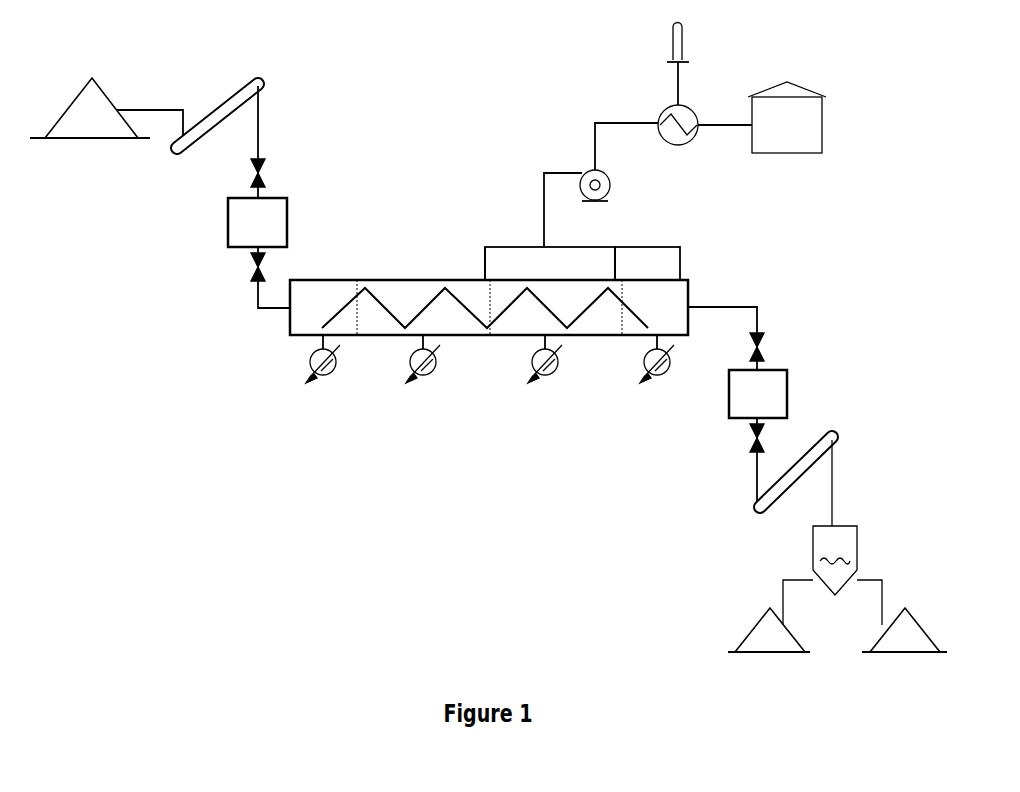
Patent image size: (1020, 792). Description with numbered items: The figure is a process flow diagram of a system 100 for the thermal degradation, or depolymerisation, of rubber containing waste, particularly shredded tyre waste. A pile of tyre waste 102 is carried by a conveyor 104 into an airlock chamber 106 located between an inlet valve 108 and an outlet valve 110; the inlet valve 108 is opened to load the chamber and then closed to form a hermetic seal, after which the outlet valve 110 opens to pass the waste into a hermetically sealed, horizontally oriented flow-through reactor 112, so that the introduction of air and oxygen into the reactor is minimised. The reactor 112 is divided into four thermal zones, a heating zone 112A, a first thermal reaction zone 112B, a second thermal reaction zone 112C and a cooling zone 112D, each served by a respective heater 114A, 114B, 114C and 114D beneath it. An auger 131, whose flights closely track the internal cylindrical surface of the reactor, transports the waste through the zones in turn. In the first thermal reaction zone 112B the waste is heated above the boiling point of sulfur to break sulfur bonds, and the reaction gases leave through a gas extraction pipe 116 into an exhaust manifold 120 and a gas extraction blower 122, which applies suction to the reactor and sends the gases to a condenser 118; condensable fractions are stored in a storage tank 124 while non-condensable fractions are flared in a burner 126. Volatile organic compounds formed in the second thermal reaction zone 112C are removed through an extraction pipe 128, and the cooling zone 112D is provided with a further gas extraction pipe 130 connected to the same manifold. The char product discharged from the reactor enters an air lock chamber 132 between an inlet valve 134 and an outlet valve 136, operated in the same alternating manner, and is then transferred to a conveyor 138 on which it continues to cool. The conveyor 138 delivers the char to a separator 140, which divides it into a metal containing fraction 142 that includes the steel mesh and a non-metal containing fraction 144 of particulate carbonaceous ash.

The system 100 is at (100, 579).
The tyre waste 102 is at (90, 122).
The conveyor 104 is at (217, 105).
The airlock chamber 106 is at (257, 222).
The inlet valve 108 is at (271, 173).
The outlet valve 110 is at (237, 267).
The flow-through reactor 112 is at (489, 299).
The heating zone 112A is at (314, 300).
The first thermal reaction zone 112B is at (406, 300).
The second thermal reaction zone 112C is at (570, 300).
The cooling zone 112D is at (659, 300).
The heater 114A is at (315, 372).
The heater 114B is at (421, 372).
The heater 114C is at (544, 372).
The heater 114D is at (660, 372).
The gas extraction pipe 116 is at (462, 262).
The condenser 118 is at (678, 135).
The exhaust manifold 120 is at (542, 210).
The gas extraction blower 122 is at (594, 196).
The storage tank 124 is at (787, 127).
The burner 126 is at (691, 64).
The extraction pipe 128 is at (550, 263).
The gas extraction pipe 130 is at (664, 263).
The auger 131 is at (462, 312).
The air lock chamber 132 is at (758, 394).
The inlet valve 134 is at (770, 346).
The outlet valve 136 is at (741, 440).
The conveyor 138 is at (775, 482).
The separator 140 is at (852, 560).
The metal containing fraction 142 is at (769, 641).
The non-metal containing fraction 144 is at (904, 641).